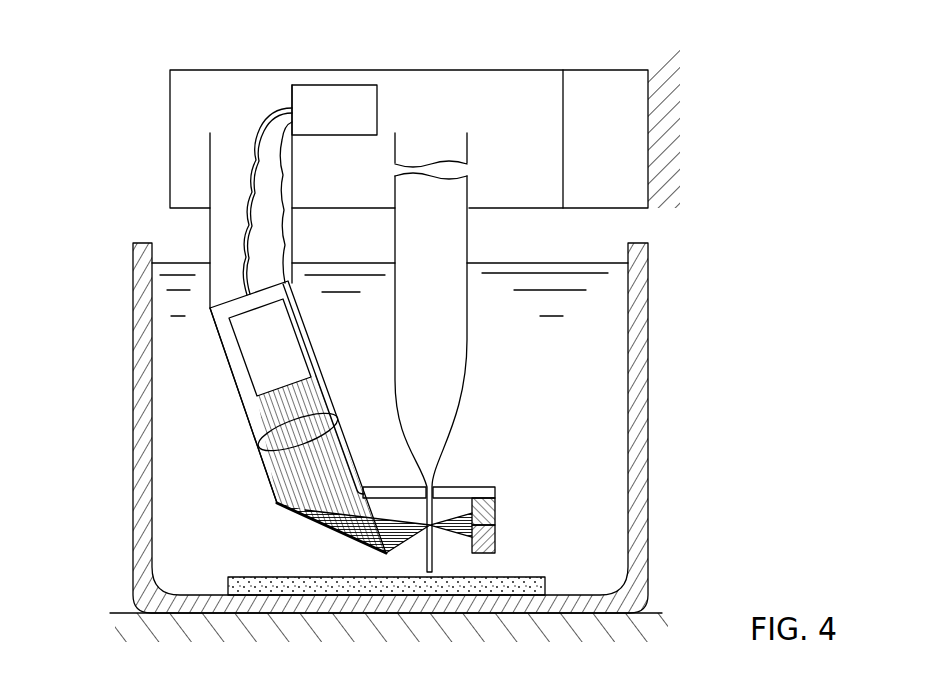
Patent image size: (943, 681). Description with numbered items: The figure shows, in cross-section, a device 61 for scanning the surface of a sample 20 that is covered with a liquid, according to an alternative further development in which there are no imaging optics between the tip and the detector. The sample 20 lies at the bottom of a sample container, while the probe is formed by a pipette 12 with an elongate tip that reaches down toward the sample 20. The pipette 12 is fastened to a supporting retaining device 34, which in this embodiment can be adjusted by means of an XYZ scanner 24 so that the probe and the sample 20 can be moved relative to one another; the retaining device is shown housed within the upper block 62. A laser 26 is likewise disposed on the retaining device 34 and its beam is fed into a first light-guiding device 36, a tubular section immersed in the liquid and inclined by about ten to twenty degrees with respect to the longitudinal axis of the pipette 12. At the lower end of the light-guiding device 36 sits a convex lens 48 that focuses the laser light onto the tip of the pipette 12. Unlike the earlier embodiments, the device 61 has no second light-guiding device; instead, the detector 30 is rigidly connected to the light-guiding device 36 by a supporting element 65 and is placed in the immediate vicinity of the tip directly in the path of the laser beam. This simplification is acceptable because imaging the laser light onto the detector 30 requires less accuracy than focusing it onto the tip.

The device 61 is at (112, 207).
The housing 62 is at (168, 70).
The supporting retaining device 34 is at (480, 78).
The XYZ scanner 24 is at (595, 78).
The pipette 12 is at (462, 355).
The laser 26 is at (233, 337).
The first light-guiding device 36 is at (232, 400).
The convex lens 48 is at (262, 447).
The detector 30 is at (508, 525).
The supporting element 65 is at (496, 486).
The sample 20 is at (548, 575).